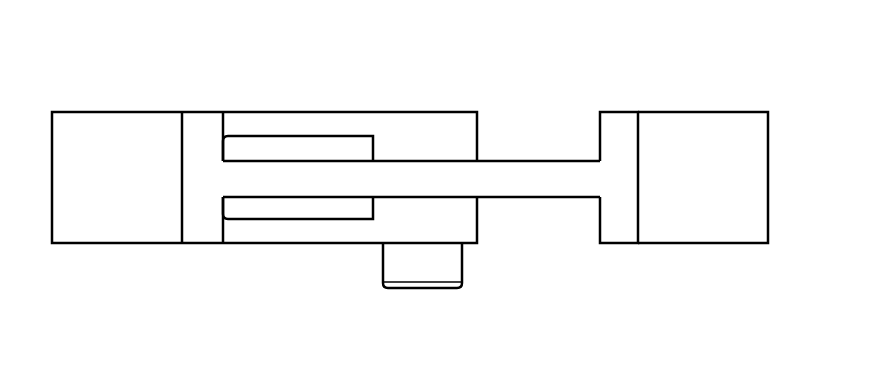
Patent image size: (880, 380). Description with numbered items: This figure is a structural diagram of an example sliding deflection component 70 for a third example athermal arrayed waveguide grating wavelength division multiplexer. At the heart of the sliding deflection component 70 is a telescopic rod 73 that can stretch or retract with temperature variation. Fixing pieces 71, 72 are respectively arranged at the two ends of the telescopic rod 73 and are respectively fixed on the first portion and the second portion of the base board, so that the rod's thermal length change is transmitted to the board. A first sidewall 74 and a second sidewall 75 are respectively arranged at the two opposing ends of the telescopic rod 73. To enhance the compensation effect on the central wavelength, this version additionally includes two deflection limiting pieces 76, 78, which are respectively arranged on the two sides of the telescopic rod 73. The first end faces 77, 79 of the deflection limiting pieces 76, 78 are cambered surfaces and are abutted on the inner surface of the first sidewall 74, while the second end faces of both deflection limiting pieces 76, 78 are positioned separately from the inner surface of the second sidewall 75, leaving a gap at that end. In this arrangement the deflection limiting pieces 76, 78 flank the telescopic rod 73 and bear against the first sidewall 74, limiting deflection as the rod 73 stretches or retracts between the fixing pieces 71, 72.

The sliding deflection component 70 is at (700, 97).
The fixing piece 71 is at (137, 233).
The fixing piece 72 is at (700, 232).
The telescopic rod 73 is at (492, 187).
The first sidewall 74 is at (195, 122).
The second sidewall 75 is at (620, 140).
The deflection limiting piece 76 is at (373, 233).
The first end face 77 is at (230, 245).
The deflection limiting piece 78 is at (385, 122).
The first end face 79 is at (225, 132).